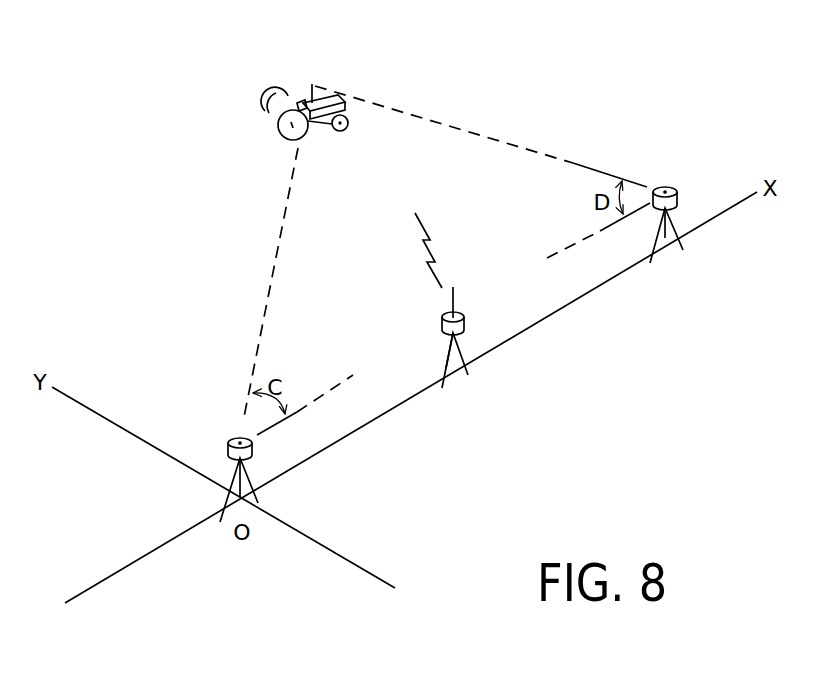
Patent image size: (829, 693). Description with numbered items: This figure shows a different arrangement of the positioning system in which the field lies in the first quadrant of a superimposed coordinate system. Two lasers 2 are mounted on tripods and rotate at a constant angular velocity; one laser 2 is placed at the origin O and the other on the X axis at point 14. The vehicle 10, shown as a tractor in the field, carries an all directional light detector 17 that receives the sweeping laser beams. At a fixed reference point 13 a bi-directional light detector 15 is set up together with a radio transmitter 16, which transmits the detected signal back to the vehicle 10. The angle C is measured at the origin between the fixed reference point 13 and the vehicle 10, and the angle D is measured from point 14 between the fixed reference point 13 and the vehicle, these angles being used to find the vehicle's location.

The laser 2 is at (233, 437).
The vehicle 10 is at (263, 110).
The point 13 is at (455, 372).
The point 14 is at (666, 218).
The bi-directional light detector 15 is at (463, 323).
The radio transmitter 16 is at (457, 311).
The all directional light detector 17 is at (313, 83).